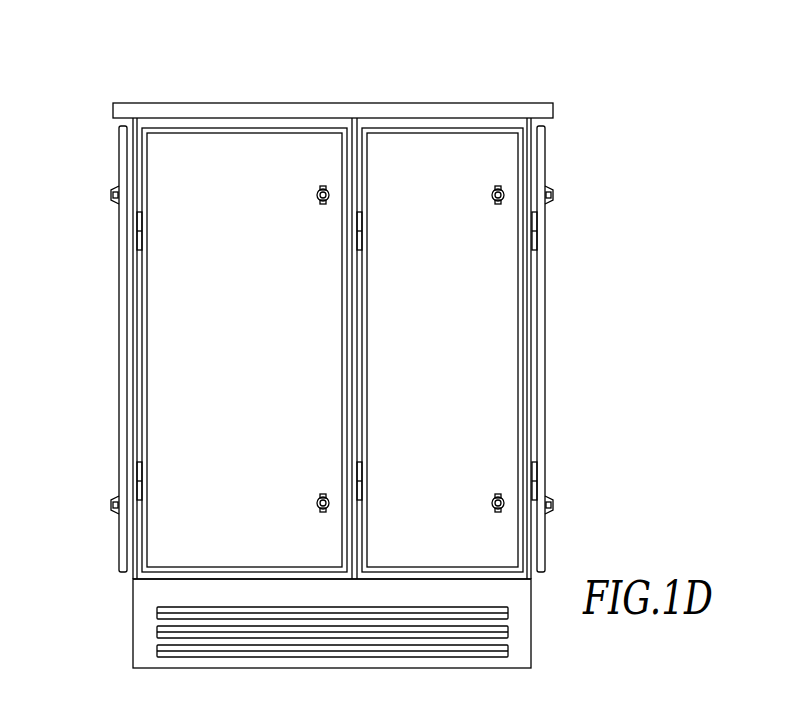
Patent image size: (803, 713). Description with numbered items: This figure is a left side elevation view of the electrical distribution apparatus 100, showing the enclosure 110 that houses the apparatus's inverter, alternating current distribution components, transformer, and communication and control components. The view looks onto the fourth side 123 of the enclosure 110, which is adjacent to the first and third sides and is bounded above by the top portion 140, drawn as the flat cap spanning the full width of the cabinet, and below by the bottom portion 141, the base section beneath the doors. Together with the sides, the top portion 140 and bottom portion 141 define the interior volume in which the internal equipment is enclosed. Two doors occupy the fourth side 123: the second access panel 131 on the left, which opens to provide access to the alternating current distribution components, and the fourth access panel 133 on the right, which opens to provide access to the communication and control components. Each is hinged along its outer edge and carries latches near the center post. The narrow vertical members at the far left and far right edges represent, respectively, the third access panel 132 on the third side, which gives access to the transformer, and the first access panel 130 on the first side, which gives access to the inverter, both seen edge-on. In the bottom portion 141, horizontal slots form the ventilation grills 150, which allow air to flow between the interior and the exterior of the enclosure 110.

The electrical distribution apparatus 100 is at (94, 109).
The enclosure 110 is at (572, 103).
The fourth side 123 is at (360, 126).
The first access panel 130 is at (543, 348).
The second access panel 131 is at (157, 292).
The third access panel 132 is at (120, 328).
The fourth access panel 133 is at (507, 293).
The top portion 140 is at (260, 103).
The bottom portion 141 is at (160, 668).
The ventilation grills 150 is at (510, 652).